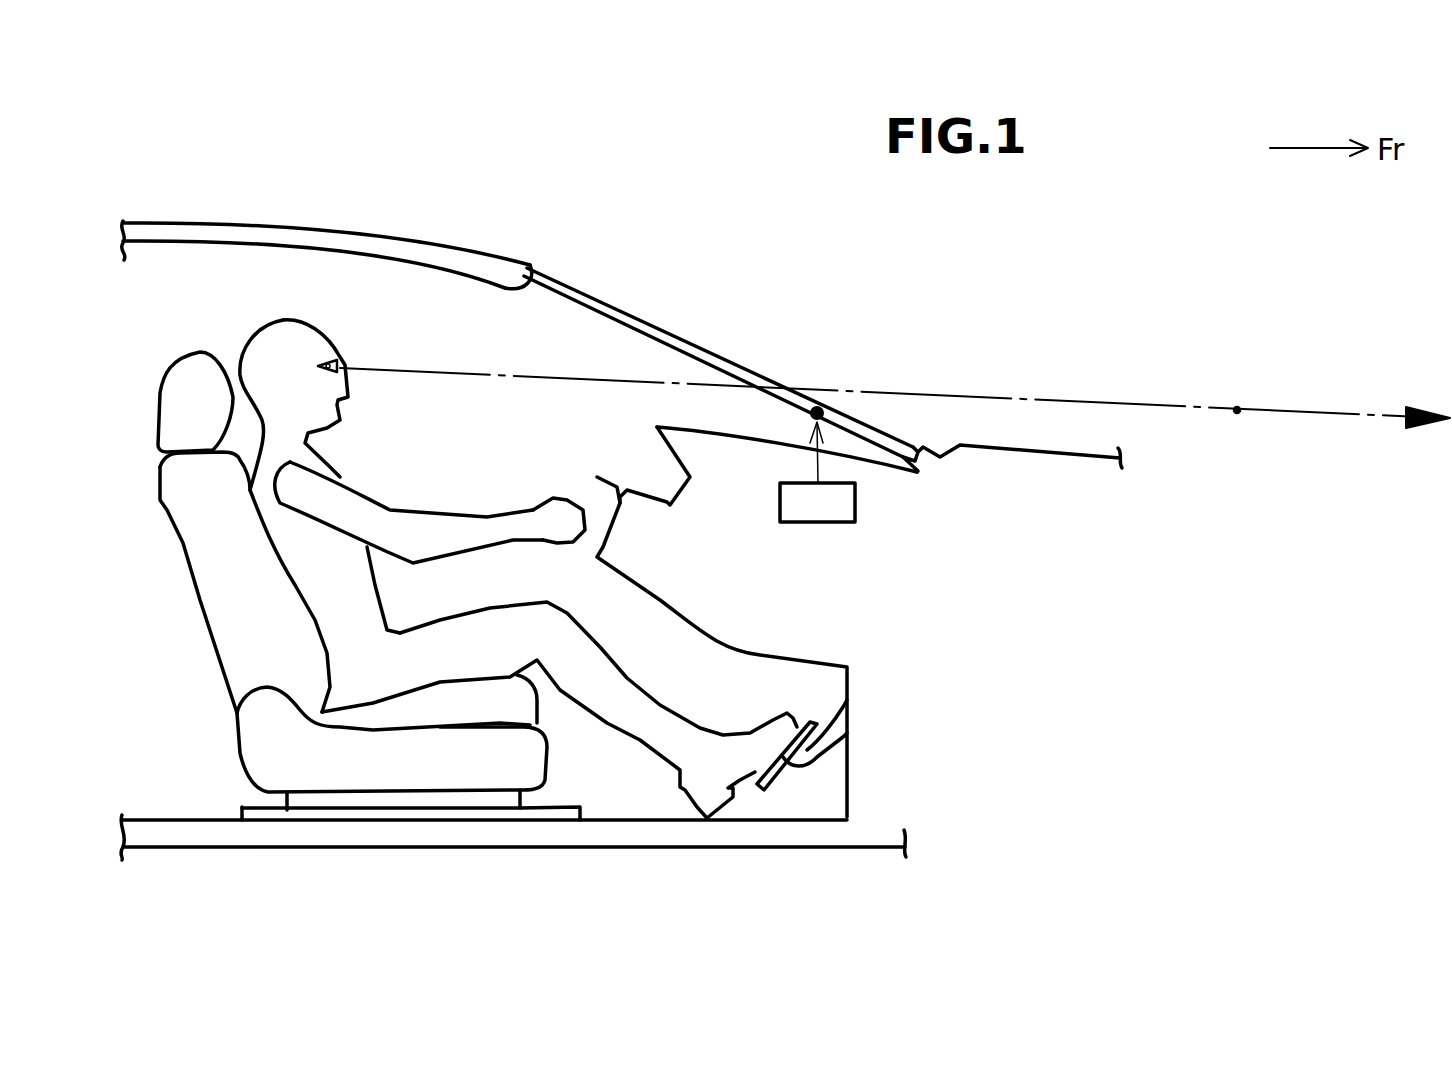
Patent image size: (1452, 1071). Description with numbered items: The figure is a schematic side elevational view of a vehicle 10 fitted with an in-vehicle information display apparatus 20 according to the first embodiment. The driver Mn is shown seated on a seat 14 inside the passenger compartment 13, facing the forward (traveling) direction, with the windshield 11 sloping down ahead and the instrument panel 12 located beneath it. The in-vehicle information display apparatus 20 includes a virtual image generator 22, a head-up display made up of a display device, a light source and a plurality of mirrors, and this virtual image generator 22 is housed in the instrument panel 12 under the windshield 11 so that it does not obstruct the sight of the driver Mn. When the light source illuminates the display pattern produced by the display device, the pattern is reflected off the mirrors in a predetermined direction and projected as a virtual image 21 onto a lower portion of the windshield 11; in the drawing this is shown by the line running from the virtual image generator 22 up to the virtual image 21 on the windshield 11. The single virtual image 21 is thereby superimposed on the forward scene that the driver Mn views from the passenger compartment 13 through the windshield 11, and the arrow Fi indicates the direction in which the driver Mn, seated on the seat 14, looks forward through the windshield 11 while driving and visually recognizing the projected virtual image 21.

The vehicle 10 is at (172, 220).
The windshield 11 is at (658, 327).
The instrument panel 12 is at (733, 450).
The passenger compartment 13 is at (513, 355).
The seat 14 is at (387, 773).
The in-vehicle information display apparatus 20 is at (872, 513).
The virtual image 21 is at (820, 406).
The virtual image generator 22 is at (820, 523).
The driver Mn is at (273, 316).
The eye point Pi is at (330, 362).
The arrow indicating the driver's forward view Fi is at (1238, 408).